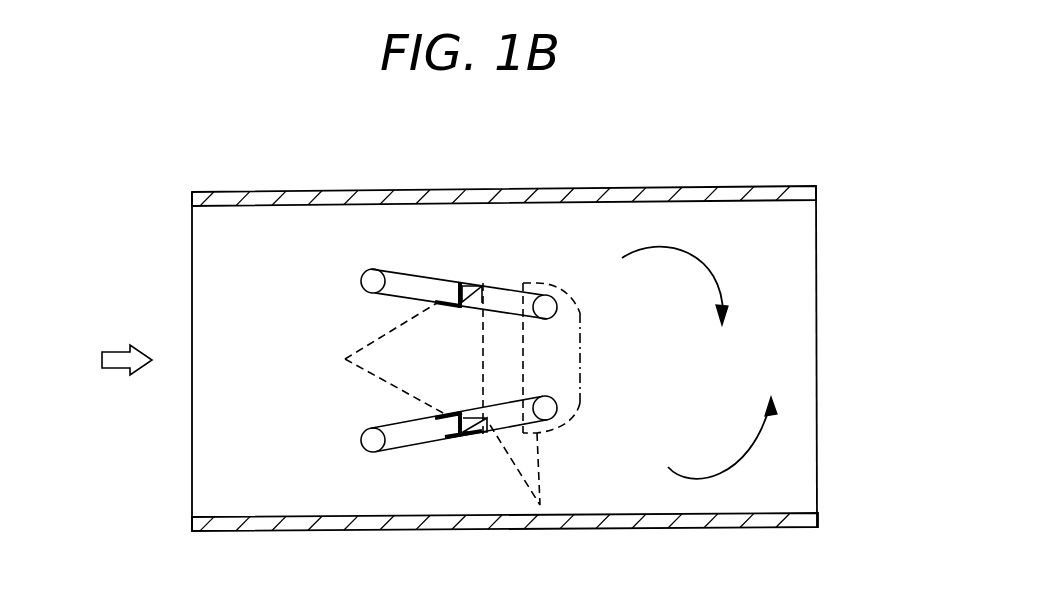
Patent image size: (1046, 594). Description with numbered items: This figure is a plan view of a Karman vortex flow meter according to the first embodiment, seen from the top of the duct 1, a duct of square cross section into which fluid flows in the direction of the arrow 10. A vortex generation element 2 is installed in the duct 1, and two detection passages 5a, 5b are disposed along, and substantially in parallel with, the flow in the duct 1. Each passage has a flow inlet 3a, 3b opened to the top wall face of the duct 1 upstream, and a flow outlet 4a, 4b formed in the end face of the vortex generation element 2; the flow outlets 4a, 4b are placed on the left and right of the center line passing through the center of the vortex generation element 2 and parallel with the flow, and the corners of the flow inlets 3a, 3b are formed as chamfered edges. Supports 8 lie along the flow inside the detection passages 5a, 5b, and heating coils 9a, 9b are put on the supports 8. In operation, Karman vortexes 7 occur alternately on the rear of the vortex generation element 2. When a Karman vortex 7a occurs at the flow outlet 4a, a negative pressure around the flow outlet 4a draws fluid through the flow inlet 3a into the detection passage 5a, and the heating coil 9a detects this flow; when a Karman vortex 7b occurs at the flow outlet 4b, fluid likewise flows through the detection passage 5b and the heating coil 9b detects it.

The duct 1 is at (737, 514).
The vortex generation element 2 is at (540, 505).
The flow inlet 3a is at (361, 442).
The flow inlet 3b is at (361, 281).
The flow outlet 4a is at (558, 405).
The flow outlet 4b is at (558, 305).
The detection passage 5a is at (402, 451).
The detection passage 5b is at (410, 269).
The Karman vortex 7 is at (699, 349).
The Karman vortex 7a is at (688, 477).
The Karman vortex 7b is at (680, 247).
The support 8 is at (452, 283).
The heating coil 9a is at (443, 432).
The heating coil 9b is at (473, 286).
The fluid flow direction 10 is at (113, 373).